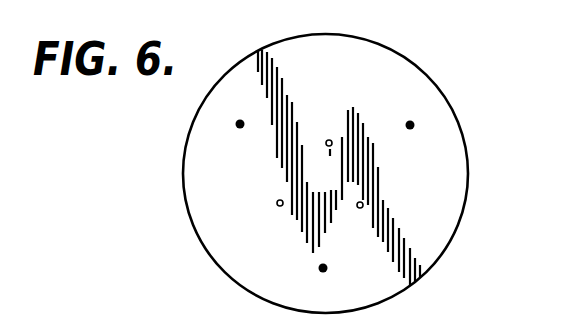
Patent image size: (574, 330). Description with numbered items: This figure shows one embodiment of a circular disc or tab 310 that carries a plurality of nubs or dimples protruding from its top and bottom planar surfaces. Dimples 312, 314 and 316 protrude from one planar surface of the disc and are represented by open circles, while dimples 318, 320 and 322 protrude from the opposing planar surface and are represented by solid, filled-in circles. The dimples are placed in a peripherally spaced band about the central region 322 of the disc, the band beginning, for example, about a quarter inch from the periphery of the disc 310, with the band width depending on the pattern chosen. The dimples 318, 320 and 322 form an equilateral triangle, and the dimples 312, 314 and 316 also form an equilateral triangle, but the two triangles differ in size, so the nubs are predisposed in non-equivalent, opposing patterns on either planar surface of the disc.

The disc 310 is at (431, 79).
The dimple 312 is at (277, 202).
The dimple 314 is at (327, 140).
The dimple 316 is at (363, 204).
The dimple 318 is at (327, 267).
The dimple 320 is at (243, 128).
The dimple 322 is at (414, 127).